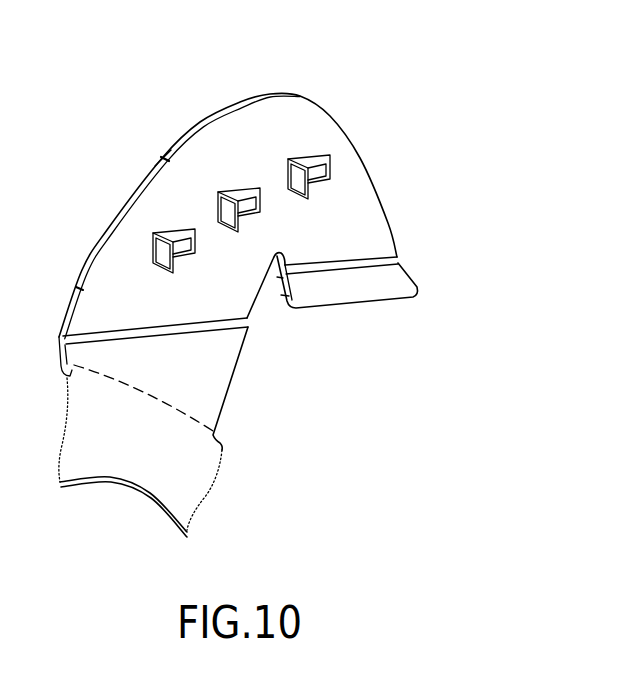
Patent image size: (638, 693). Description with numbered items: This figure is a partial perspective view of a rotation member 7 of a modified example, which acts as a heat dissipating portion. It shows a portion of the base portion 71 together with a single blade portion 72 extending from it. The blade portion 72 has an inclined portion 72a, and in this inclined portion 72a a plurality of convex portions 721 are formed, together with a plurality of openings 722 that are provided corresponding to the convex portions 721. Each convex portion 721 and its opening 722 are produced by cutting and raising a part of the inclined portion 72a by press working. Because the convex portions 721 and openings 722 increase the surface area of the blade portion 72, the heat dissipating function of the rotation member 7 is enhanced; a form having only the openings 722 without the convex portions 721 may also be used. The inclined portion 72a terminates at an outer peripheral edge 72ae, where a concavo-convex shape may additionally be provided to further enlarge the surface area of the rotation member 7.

The rotation member 7 is at (422, 72).
The base portion 71 is at (122, 470).
The blade portion 72 is at (260, 261).
The inclined portion 72a is at (373, 211).
The outer peripheral edge 72ae is at (181, 127).
The convex portion 721 is at (156, 254).
The opening 722 is at (176, 238).